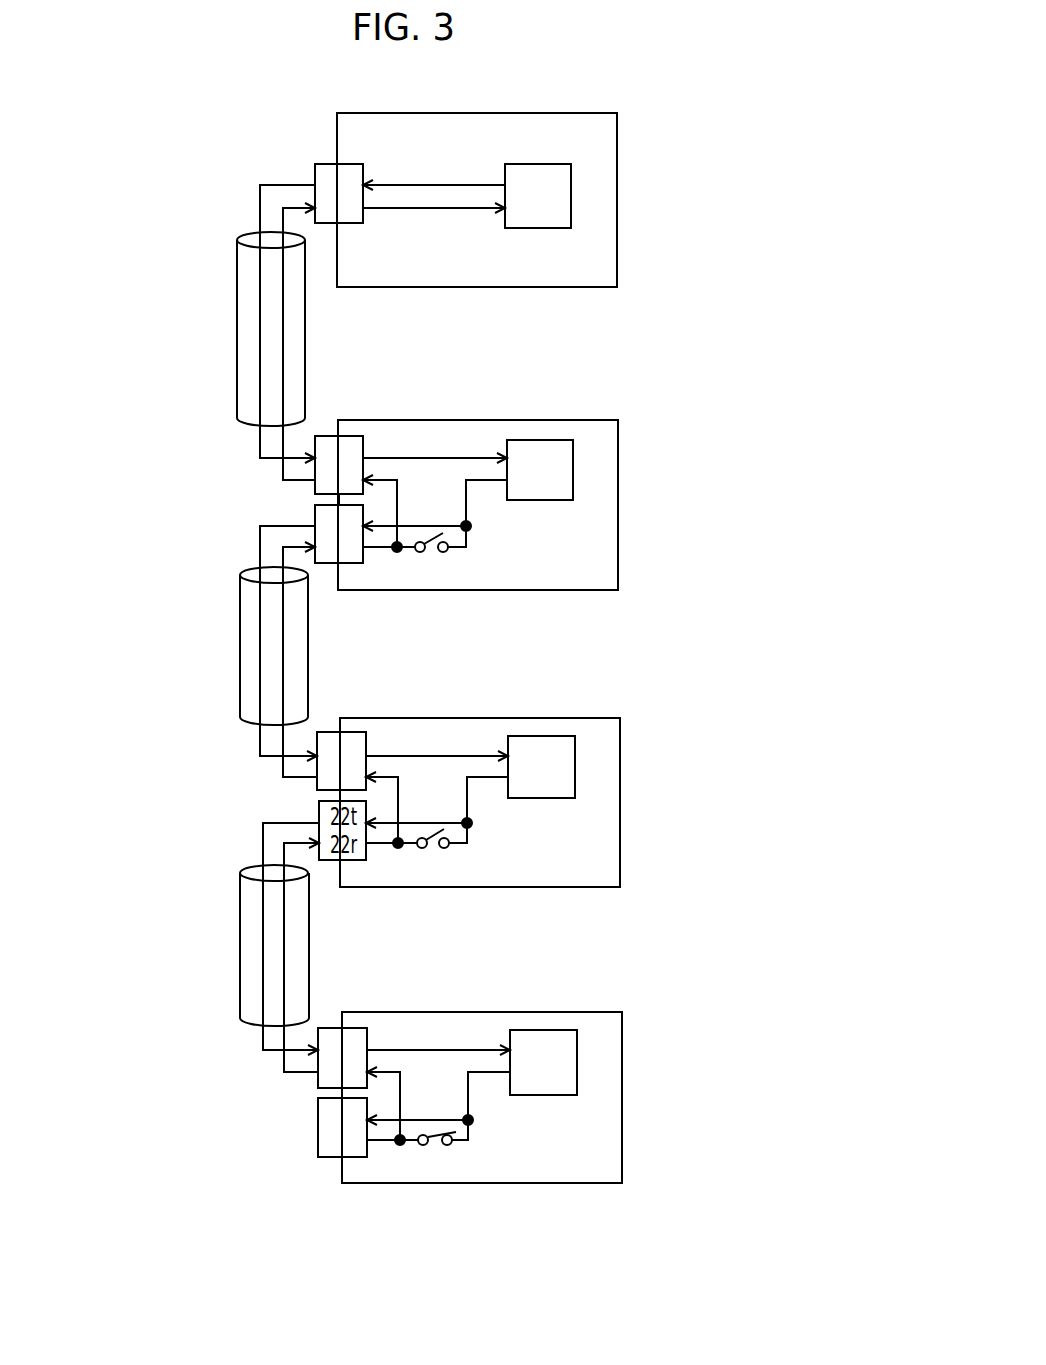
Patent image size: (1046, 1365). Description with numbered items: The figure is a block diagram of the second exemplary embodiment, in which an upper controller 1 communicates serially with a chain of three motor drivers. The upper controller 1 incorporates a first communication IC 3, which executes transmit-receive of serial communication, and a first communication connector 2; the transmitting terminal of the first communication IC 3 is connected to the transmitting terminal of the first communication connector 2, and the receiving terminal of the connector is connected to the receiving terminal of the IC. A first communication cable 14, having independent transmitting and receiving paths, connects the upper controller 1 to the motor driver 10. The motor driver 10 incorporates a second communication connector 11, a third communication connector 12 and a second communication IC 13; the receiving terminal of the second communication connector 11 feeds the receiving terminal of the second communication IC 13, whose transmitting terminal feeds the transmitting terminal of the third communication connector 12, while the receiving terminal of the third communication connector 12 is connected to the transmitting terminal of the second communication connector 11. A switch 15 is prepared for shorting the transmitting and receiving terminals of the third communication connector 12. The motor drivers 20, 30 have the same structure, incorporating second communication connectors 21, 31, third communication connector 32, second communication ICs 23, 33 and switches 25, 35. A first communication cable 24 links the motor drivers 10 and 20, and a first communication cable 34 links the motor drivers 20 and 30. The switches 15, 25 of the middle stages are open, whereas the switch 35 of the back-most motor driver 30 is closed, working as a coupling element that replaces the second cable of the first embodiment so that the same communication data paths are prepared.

The upper controller 1 is at (605, 190).
The first communication connector 2 is at (320, 163).
The first communication IC 3 is at (537, 162).
The motor driver 10 is at (603, 500).
The second communication connector 11 is at (347, 437).
The third communication connector 12 is at (355, 563).
The second communication IC 13 is at (548, 435).
The first communication cable 14 is at (232, 318).
The switch 15 is at (437, 558).
The motor driver 20 is at (610, 792).
The second communication connector 21 is at (353, 732).
The second communication IC 23 is at (547, 736).
The first communication cable 24 is at (235, 638).
The switch 25 is at (437, 858).
The motor driver 30 is at (607, 1097).
The second communication connector 31 is at (353, 1028).
The third communication connector 32 is at (332, 1157).
The second communication IC 33 is at (537, 1030).
The first communication cable 34 is at (220, 953).
The switch 35 is at (435, 1155).